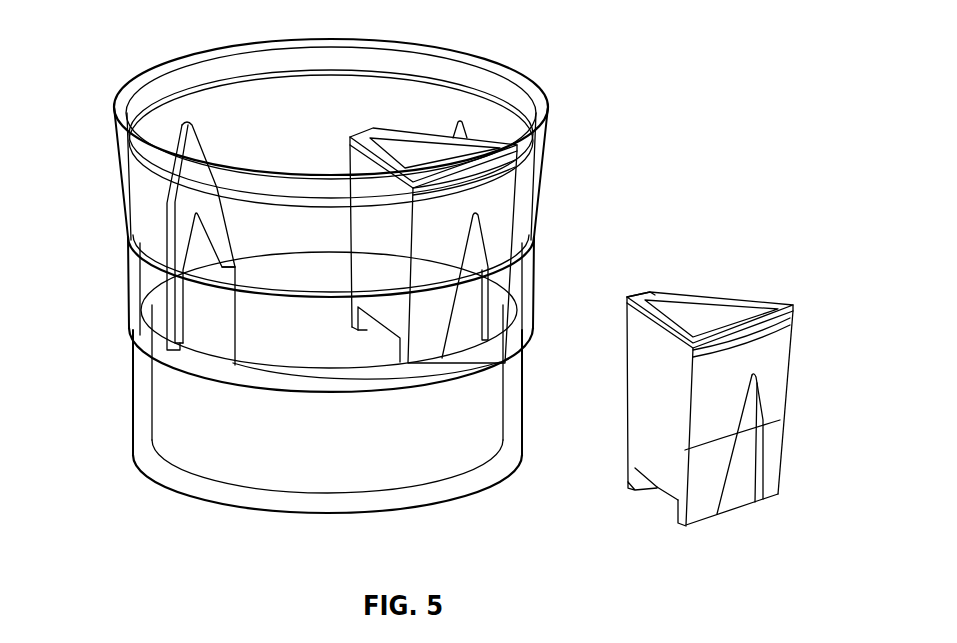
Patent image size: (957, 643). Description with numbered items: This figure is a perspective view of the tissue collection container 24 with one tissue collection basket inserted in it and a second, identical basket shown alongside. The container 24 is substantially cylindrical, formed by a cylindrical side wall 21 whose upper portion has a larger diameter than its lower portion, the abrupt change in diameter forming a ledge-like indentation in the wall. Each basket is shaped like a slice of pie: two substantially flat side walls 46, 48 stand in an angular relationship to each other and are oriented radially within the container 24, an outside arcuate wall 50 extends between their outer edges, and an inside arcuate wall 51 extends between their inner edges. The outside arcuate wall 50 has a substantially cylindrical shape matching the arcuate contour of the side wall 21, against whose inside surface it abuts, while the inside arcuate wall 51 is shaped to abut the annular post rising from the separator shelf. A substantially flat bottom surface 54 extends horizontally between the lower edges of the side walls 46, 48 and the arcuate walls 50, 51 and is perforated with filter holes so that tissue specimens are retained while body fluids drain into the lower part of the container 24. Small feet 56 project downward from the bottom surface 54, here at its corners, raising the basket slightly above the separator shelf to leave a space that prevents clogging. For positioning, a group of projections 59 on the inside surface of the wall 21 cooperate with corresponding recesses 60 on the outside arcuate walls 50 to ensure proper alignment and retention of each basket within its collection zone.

The cylindrical side wall 21 is at (127, 175).
The tissue collection container 24 is at (131, 397).
The side wall 46 is at (640, 410).
The side wall 48 is at (715, 292).
The outside arcuate wall 50 is at (770, 372).
The inside arcuate wall 51 is at (640, 292).
The bottom surface 54 is at (663, 492).
The feet 56 is at (628, 483).
The projections 59 is at (198, 295).
The recesses 60 is at (730, 497).